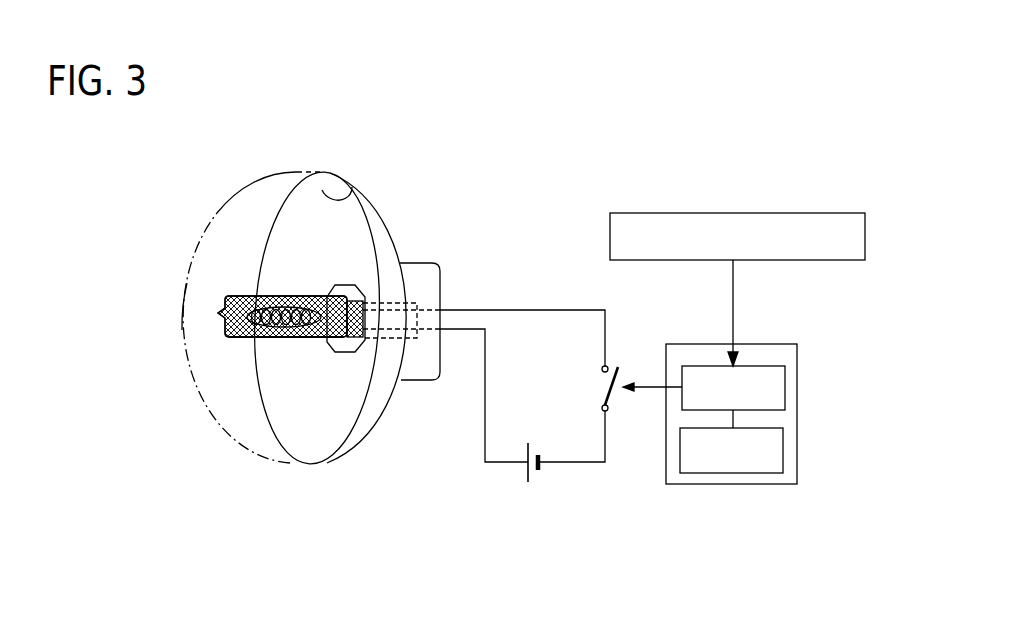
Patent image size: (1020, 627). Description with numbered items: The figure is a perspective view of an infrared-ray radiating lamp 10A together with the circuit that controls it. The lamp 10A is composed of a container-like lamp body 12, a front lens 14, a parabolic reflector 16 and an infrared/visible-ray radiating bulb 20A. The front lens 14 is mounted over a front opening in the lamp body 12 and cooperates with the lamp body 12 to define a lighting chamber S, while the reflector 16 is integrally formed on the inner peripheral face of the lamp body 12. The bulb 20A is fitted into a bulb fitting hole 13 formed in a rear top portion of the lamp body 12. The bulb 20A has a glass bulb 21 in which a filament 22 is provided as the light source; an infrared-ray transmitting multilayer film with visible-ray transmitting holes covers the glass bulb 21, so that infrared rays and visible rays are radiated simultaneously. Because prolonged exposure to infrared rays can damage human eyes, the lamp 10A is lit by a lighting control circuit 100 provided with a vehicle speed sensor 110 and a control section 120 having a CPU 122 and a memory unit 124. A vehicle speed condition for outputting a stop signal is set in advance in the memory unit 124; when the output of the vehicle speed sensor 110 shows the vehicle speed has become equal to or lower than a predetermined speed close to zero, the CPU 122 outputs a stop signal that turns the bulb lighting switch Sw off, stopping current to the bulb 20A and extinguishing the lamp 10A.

The front lens 14 is at (242, 183).
The parabolic reflector 16 is at (322, 190).
The lamp body 12 is at (387, 213).
The bulb fitting hole 13 is at (362, 293).
The infrared-ray radiating lamp 10A is at (182, 305).
The lighting chamber S is at (242, 234).
The glass bulb 21 is at (237, 338).
The infrared/visible-ray radiating bulb 20A is at (294, 345).
The filament 22 is at (318, 339).
The bulb lighting switch Sw is at (590, 388).
The vehicle speed sensor 110 is at (732, 212).
The CPU 122 is at (785, 390).
The memory unit 124 is at (783, 452).
The control section 120 is at (780, 448).
The lighting control circuit 100 is at (667, 375).